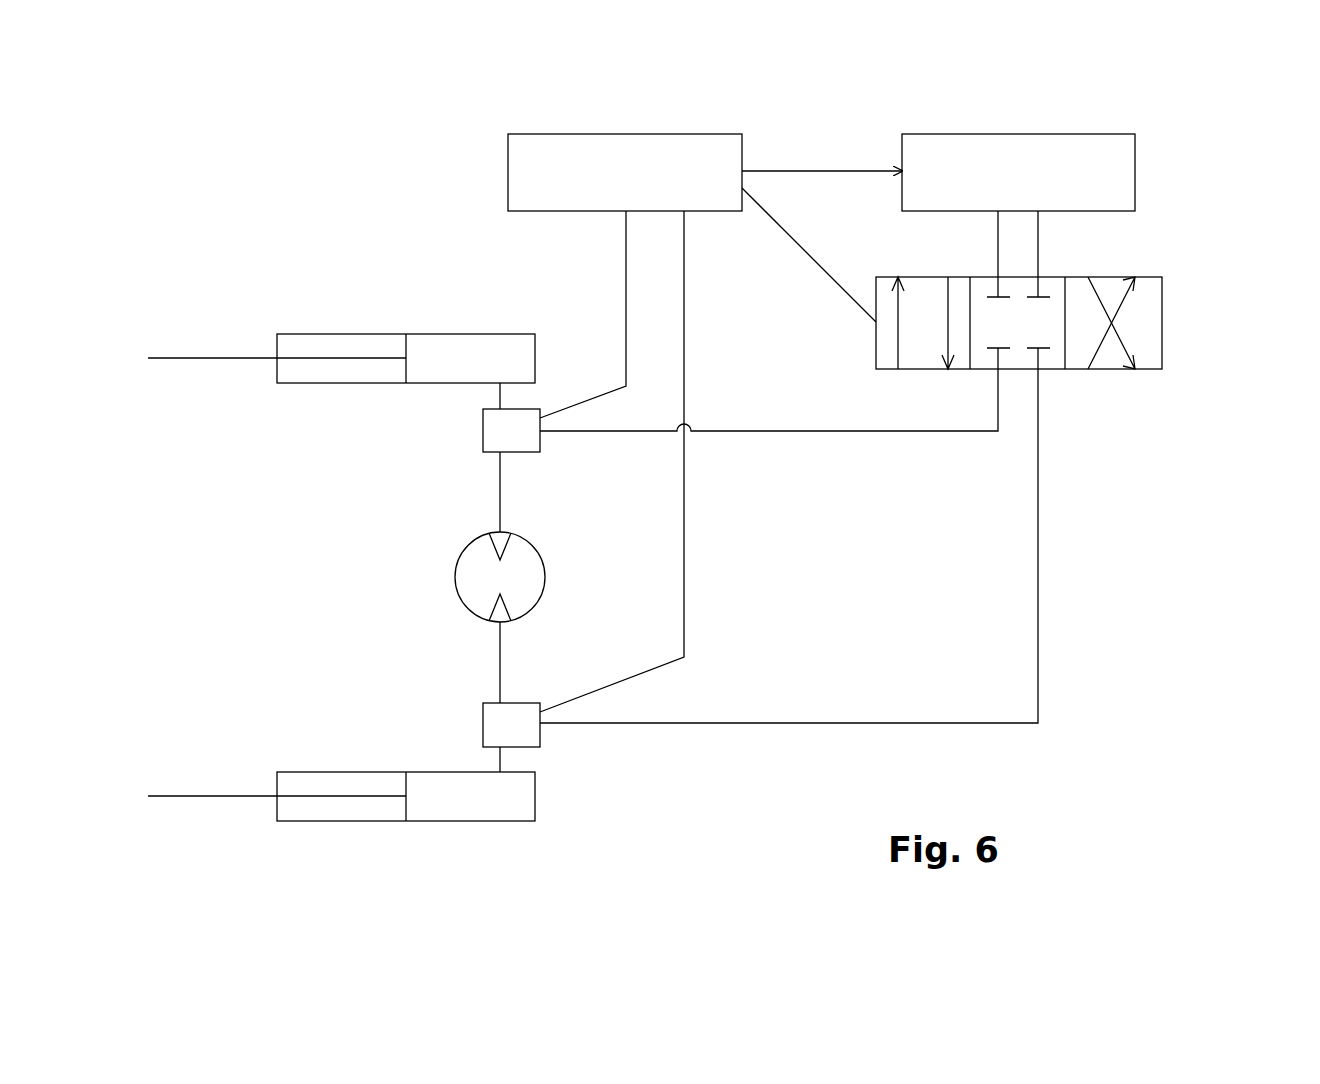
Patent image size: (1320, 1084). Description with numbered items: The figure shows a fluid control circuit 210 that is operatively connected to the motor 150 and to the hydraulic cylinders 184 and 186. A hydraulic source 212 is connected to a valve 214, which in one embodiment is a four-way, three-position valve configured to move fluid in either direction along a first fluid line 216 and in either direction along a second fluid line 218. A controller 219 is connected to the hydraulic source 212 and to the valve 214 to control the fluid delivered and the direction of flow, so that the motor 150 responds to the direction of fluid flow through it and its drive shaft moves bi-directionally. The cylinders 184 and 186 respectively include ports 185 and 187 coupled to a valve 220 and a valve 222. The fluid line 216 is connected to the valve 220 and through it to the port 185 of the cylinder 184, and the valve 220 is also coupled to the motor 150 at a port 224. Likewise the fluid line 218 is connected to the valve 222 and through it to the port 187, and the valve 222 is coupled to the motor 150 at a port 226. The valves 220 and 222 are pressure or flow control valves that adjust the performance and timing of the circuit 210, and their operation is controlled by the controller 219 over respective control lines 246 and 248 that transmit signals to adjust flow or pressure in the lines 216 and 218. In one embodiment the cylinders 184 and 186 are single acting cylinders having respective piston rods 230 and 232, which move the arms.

The fluid control circuit 210 is at (268, 186).
The controller 219 is at (508, 172).
The hydraulic source 212 is at (1135, 170).
The valve 214 is at (1162, 320).
The hydraulic cylinder 184 is at (440, 343).
The hydraulic cylinder 186 is at (470, 806).
The port 185 is at (500, 393).
The port 187 is at (503, 757).
The piston rod 230 is at (195, 358).
The piston rod 232 is at (208, 796).
The valve 220 is at (483, 440).
The valve 222 is at (483, 727).
The motor 150 is at (452, 554).
The port 224 is at (500, 532).
The port 226 is at (500, 622).
The control line 246 is at (626, 270).
The control line 248 is at (684, 553).
The first fluid line 216 is at (880, 432).
The second fluid line 218 is at (885, 722).